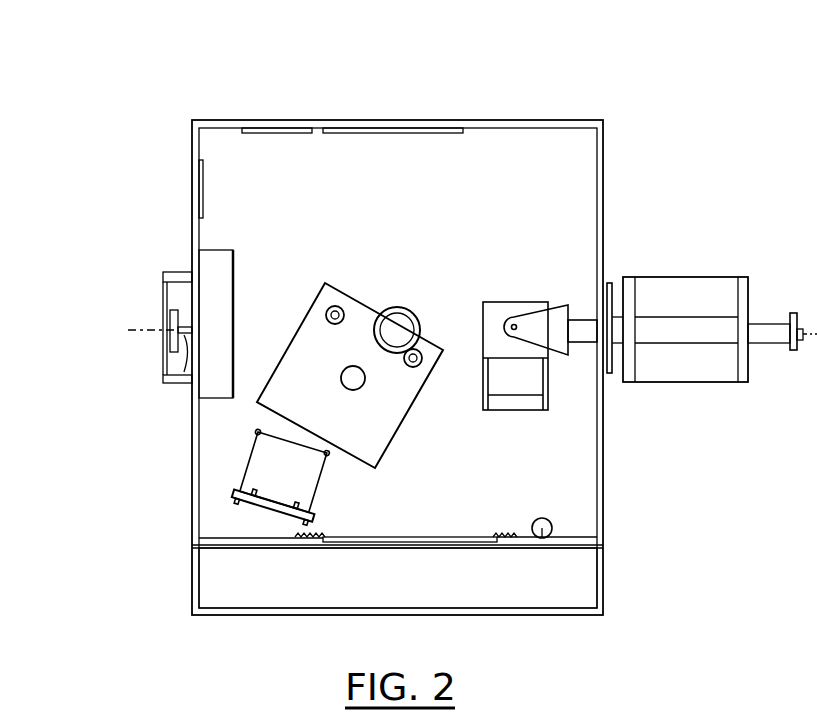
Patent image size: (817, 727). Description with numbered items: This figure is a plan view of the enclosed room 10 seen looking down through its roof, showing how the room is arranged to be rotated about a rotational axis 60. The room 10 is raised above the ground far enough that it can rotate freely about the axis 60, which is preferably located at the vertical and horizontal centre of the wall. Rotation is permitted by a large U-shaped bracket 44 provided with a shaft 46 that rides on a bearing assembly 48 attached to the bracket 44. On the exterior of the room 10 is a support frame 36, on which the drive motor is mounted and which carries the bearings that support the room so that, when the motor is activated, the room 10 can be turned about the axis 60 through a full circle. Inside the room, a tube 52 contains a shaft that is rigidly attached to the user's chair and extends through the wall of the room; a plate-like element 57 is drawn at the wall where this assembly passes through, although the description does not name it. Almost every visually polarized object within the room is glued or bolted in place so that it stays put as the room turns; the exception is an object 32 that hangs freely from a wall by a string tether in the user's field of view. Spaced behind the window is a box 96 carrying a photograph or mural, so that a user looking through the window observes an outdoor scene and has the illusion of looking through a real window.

The enclosed room 10 is at (557, 92).
The U-shaped bracket 44 is at (190, 277).
The bearing assembly 48 is at (172, 318).
The shaft 46 is at (185, 376).
The rotational axis 60 is at (142, 336).
The mounting plate 57 is at (610, 283).
The tube 52 is at (684, 338).
The support frame 36 is at (744, 380).
The freely suspended object 32 is at (542, 518).
The box 96 is at (556, 615).